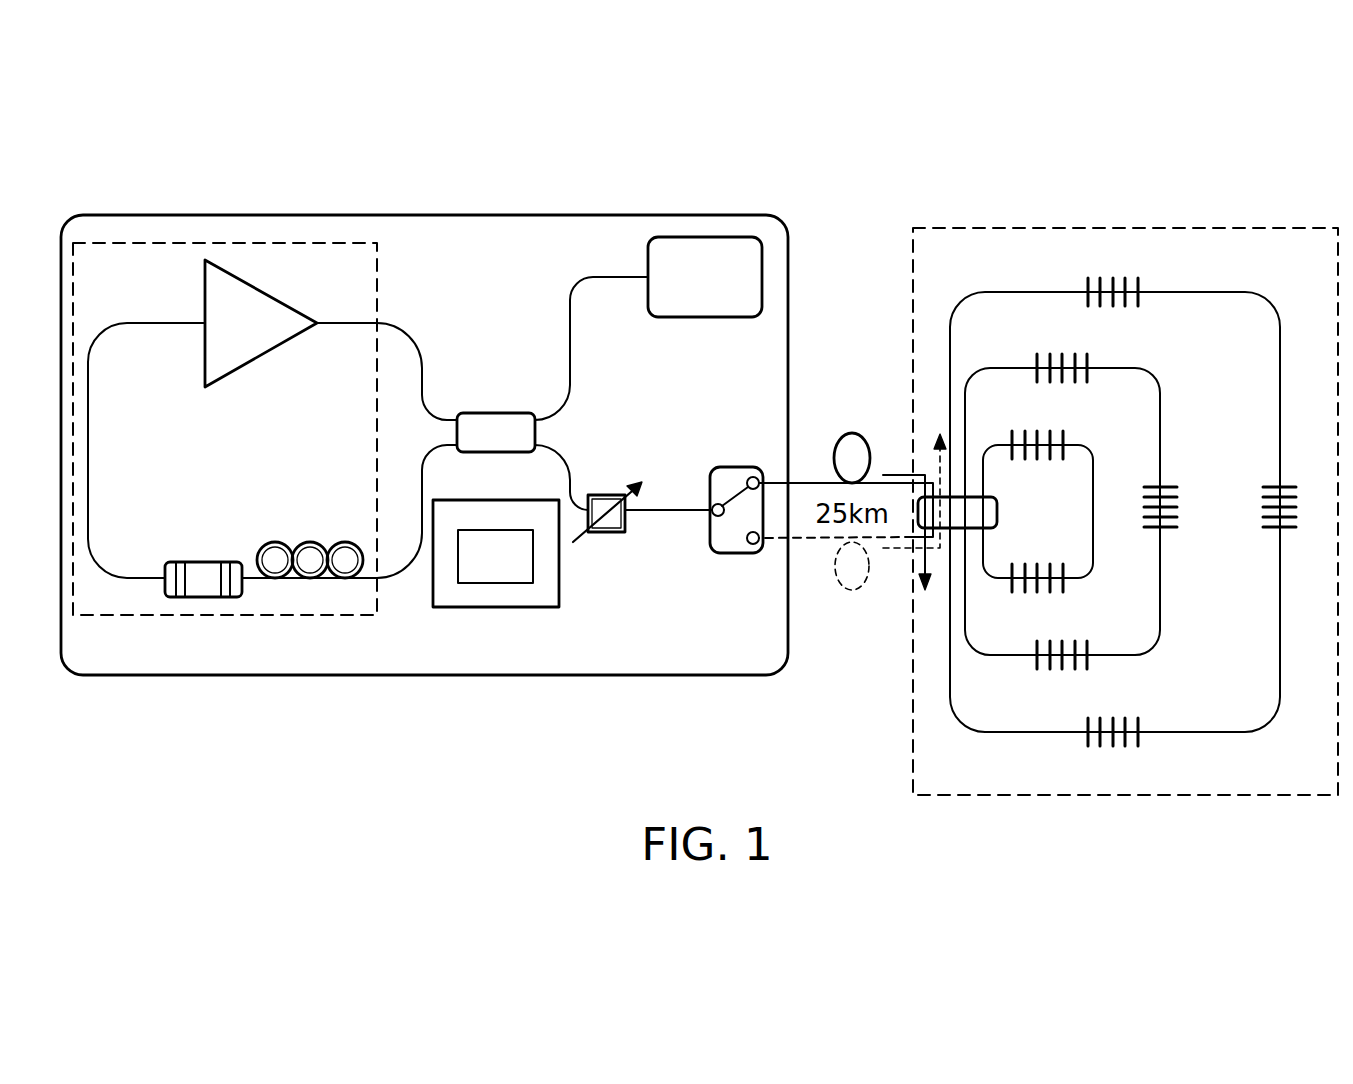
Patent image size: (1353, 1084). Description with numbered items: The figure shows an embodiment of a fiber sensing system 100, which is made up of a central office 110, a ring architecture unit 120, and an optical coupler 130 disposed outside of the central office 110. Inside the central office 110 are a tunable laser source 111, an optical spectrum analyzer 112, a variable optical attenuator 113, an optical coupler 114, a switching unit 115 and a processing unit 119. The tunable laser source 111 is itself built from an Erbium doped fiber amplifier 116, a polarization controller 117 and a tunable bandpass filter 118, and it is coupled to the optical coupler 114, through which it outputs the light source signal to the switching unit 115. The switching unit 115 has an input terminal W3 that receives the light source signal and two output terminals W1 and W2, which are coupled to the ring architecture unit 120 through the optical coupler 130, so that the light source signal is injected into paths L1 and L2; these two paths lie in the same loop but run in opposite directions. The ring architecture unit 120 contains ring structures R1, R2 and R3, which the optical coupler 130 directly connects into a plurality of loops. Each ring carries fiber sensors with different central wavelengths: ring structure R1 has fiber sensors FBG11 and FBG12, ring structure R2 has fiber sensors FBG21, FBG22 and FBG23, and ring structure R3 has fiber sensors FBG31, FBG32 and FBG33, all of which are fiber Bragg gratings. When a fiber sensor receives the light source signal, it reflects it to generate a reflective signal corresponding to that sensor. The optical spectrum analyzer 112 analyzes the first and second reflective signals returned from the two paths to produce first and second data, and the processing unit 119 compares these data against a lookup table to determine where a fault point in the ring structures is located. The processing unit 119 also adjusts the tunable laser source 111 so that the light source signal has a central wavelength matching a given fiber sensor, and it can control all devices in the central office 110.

The fiber sensing system 100 is at (1288, 113).
The central office 110 is at (423, 215).
The tunable laser source 111 is at (378, 262).
The optical spectrum analyzer 112 is at (704, 317).
The variable optical attenuator 113 is at (608, 533).
The optical coupler 114 is at (496, 413).
The switching unit 115 is at (745, 512).
The Erbium doped fiber amplifier 116 is at (261, 353).
The polarization controller 117 is at (310, 542).
The tunable bandpass filter 118 is at (203, 562).
The processing unit 119 is at (498, 607).
The ring architecture unit 120 is at (1123, 228).
The optical coupler 130 is at (997, 512).
The output terminal W1 is at (758, 478).
The output terminal W2 is at (757, 545).
The input terminal W3 is at (716, 518).
The path L1 is at (850, 435).
The path L2 is at (853, 590).
The ring structure R1 is at (1095, 480).
The ring structure R2 is at (1162, 415).
The ring structure R3 is at (1282, 352).
The fiber sensor FBG11 is at (1037, 596).
The fiber sensor FBG12 is at (1037, 429).
The fiber sensor FBG21 is at (1062, 672).
The fiber sensor FBG22 is at (1177, 513).
The fiber sensor FBG23 is at (1062, 352).
The fiber sensor FBG31 is at (1114, 749).
The fiber sensor FBG32 is at (1263, 510).
The fiber sensor FBG33 is at (1114, 277).